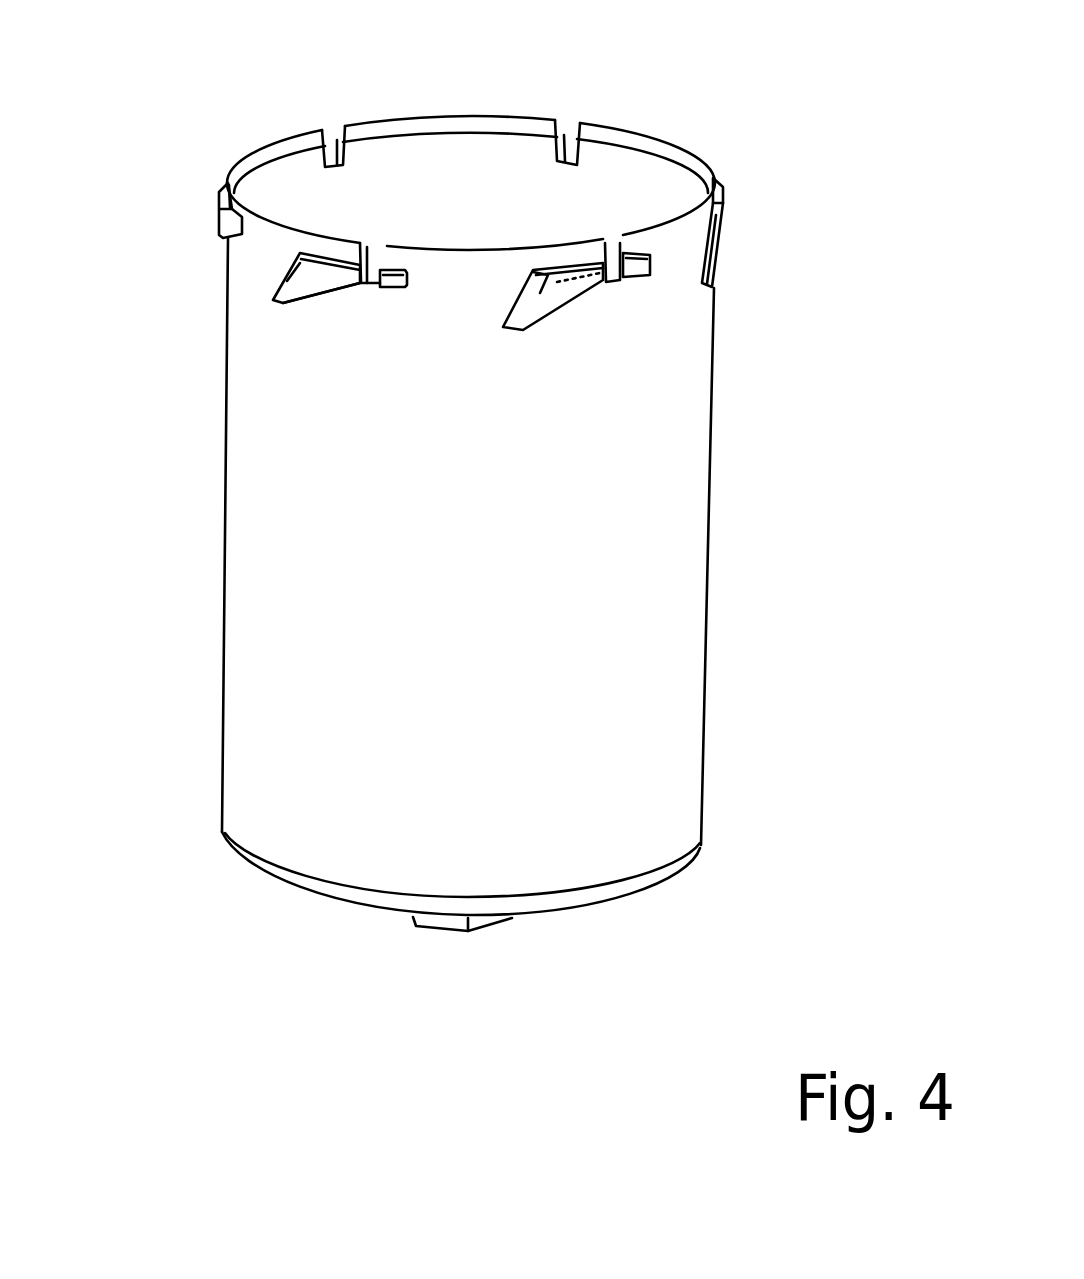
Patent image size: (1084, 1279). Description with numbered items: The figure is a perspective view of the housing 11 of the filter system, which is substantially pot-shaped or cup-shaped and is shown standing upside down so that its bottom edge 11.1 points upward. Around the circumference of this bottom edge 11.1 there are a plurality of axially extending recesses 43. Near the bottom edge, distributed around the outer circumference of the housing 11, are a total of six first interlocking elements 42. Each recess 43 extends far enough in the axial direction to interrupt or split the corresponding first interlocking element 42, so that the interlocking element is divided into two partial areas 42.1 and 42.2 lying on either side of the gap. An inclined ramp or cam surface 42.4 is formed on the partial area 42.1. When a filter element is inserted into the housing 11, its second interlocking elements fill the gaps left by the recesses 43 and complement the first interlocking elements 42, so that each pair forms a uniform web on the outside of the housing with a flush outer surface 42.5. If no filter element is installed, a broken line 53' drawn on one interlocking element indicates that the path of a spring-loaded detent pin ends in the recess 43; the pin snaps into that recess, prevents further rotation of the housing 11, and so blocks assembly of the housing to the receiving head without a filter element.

The housing 11 is at (694, 500).
The bottom edge 11.1 is at (468, 110).
The recess 43 is at (330, 128).
The first interlocking element 42 is at (557, 297).
The partial area 42.1 is at (312, 278).
The partial area 42.2 is at (386, 290).
The inclined ramp or cam surface 42.4 is at (305, 305).
The flush outer surface 42.5 is at (735, 246).
The predetermined breaking line 53' is at (733, 206).